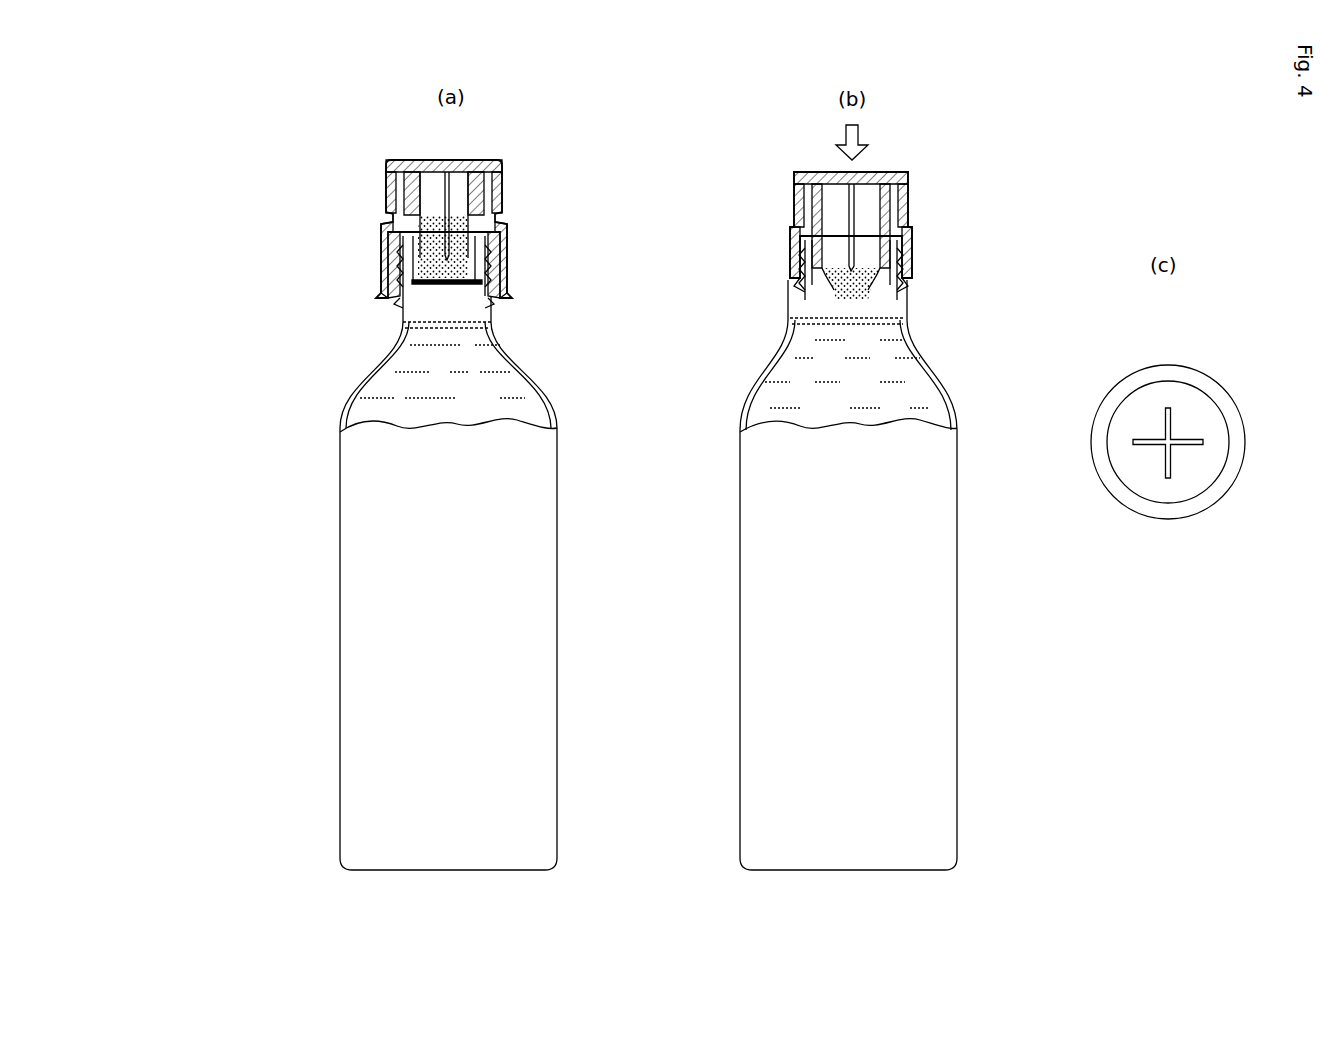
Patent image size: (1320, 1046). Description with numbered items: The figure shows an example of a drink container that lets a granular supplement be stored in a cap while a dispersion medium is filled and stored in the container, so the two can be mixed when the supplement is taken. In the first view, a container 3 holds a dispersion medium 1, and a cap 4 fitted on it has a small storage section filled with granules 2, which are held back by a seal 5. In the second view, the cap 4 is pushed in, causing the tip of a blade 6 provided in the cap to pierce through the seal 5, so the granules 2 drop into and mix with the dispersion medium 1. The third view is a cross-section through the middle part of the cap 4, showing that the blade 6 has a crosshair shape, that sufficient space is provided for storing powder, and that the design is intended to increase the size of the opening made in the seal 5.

The dispersion medium 1 is at (485, 382).
The granules 2 is at (490, 262).
The container 3 is at (340, 543).
The cap 4 is at (1198, 336).
The seal 5 is at (442, 282).
The blade 6 is at (455, 188).